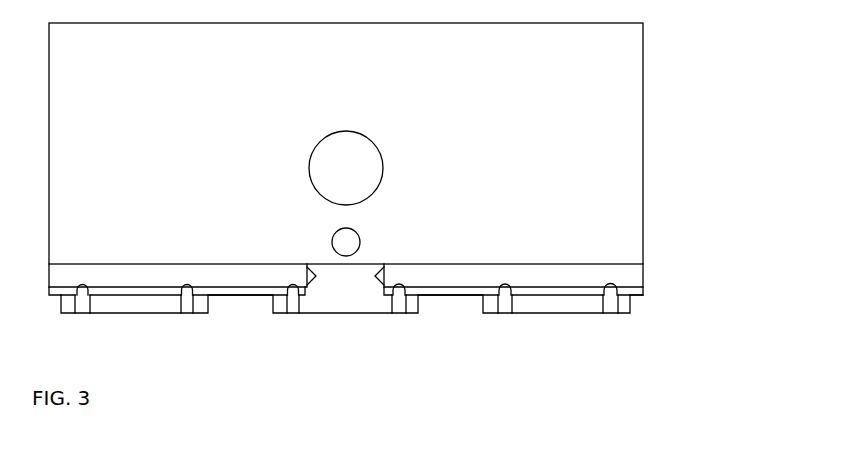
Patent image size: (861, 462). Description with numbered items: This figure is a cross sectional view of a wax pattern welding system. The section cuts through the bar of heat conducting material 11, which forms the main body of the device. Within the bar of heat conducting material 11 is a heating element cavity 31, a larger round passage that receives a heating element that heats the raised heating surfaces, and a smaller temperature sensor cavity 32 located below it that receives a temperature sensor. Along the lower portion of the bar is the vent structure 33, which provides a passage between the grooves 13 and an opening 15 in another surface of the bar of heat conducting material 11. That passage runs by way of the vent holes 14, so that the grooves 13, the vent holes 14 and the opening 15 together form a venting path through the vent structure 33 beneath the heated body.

The bar of heat conducting material 11 is at (643, 50).
The heating element cavity 31 is at (343, 168).
The temperature sensor cavity 32 is at (343, 242).
The vent structure 33 is at (513, 273).
The opening 15 is at (643, 278).
The vent holes 14 is at (618, 295).
The grooves 13 is at (610, 305).